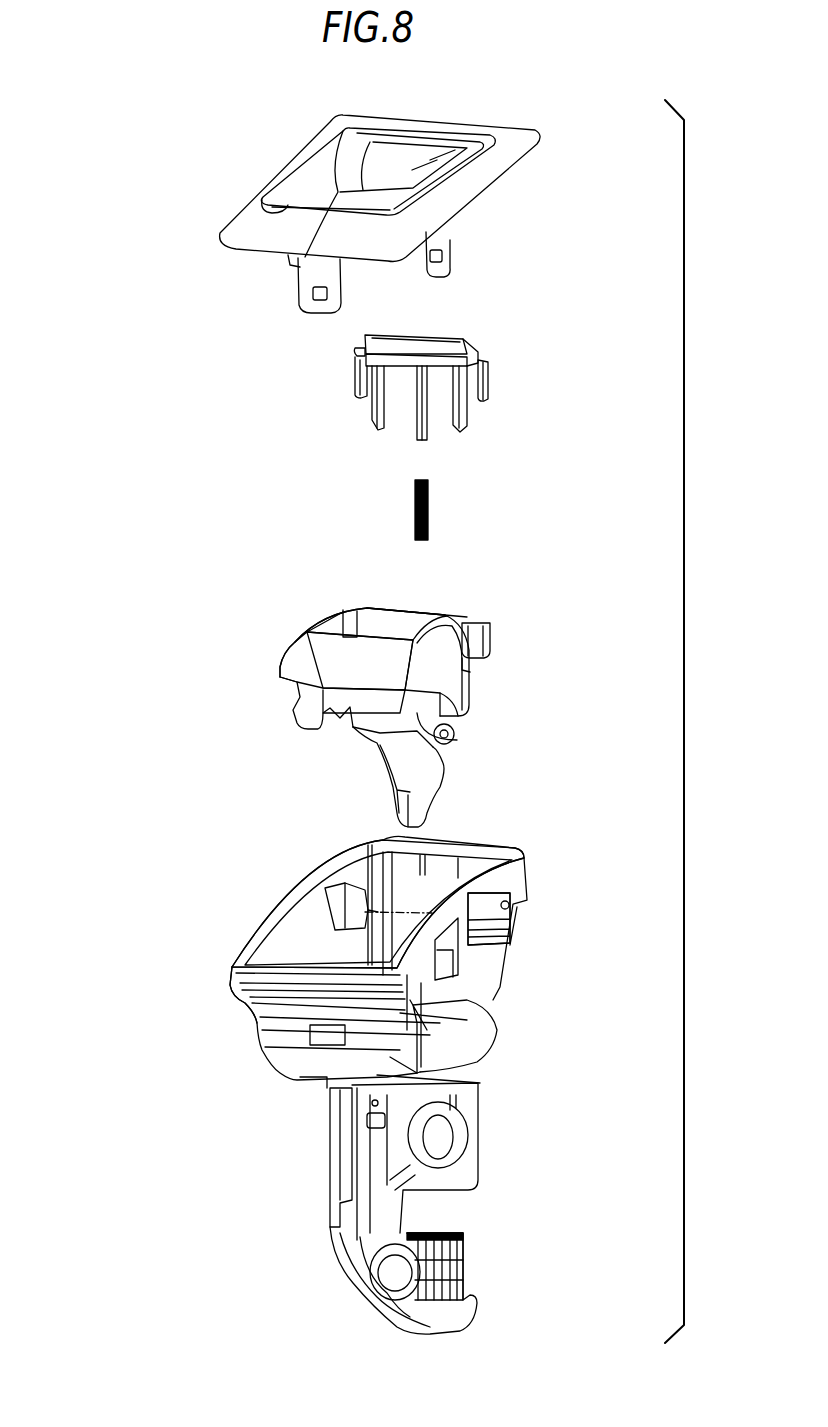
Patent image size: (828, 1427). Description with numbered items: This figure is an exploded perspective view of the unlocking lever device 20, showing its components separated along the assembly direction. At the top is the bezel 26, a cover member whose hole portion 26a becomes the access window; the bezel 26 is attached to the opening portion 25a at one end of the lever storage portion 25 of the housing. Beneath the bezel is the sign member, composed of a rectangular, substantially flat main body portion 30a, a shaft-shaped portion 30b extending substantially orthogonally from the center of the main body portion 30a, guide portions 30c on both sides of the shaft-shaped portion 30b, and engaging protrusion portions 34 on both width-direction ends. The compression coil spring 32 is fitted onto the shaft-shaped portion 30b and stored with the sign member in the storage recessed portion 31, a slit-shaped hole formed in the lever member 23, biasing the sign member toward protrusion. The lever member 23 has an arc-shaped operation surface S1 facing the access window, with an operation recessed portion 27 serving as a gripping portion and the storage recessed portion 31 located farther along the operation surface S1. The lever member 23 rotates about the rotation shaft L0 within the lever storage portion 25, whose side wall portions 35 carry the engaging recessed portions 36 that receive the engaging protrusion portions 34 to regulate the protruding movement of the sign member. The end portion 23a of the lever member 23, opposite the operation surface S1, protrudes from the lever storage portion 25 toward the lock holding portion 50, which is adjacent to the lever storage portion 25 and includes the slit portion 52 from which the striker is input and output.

The unlocking lever device 20 is at (120, 113).
The bezel 26 is at (498, 122).
The hole portion 26a is at (340, 187).
The main body portion 30a is at (453, 338).
The engaging protrusion portion 34 is at (360, 350).
The guide portion 30c is at (360, 393).
The shaft-shaped portion 30b is at (420, 440).
The compression coil spring 32 is at (430, 515).
The lever member 23 is at (293, 717).
The operation recessed portion 27 is at (337, 623).
The storage recessed portion 31 is at (477, 620).
The operation surface S1 is at (310, 658).
The rotation shaft L0 is at (456, 735).
The end portion 23a is at (433, 790).
The lever storage portion 25 is at (260, 1035).
The side wall portion 35 is at (510, 850).
The engaging recessed portion 36 is at (325, 900).
The opening portion 25a is at (250, 1000).
The lock holding portion 50 is at (330, 1160).
The slit portion 52 is at (433, 1227).